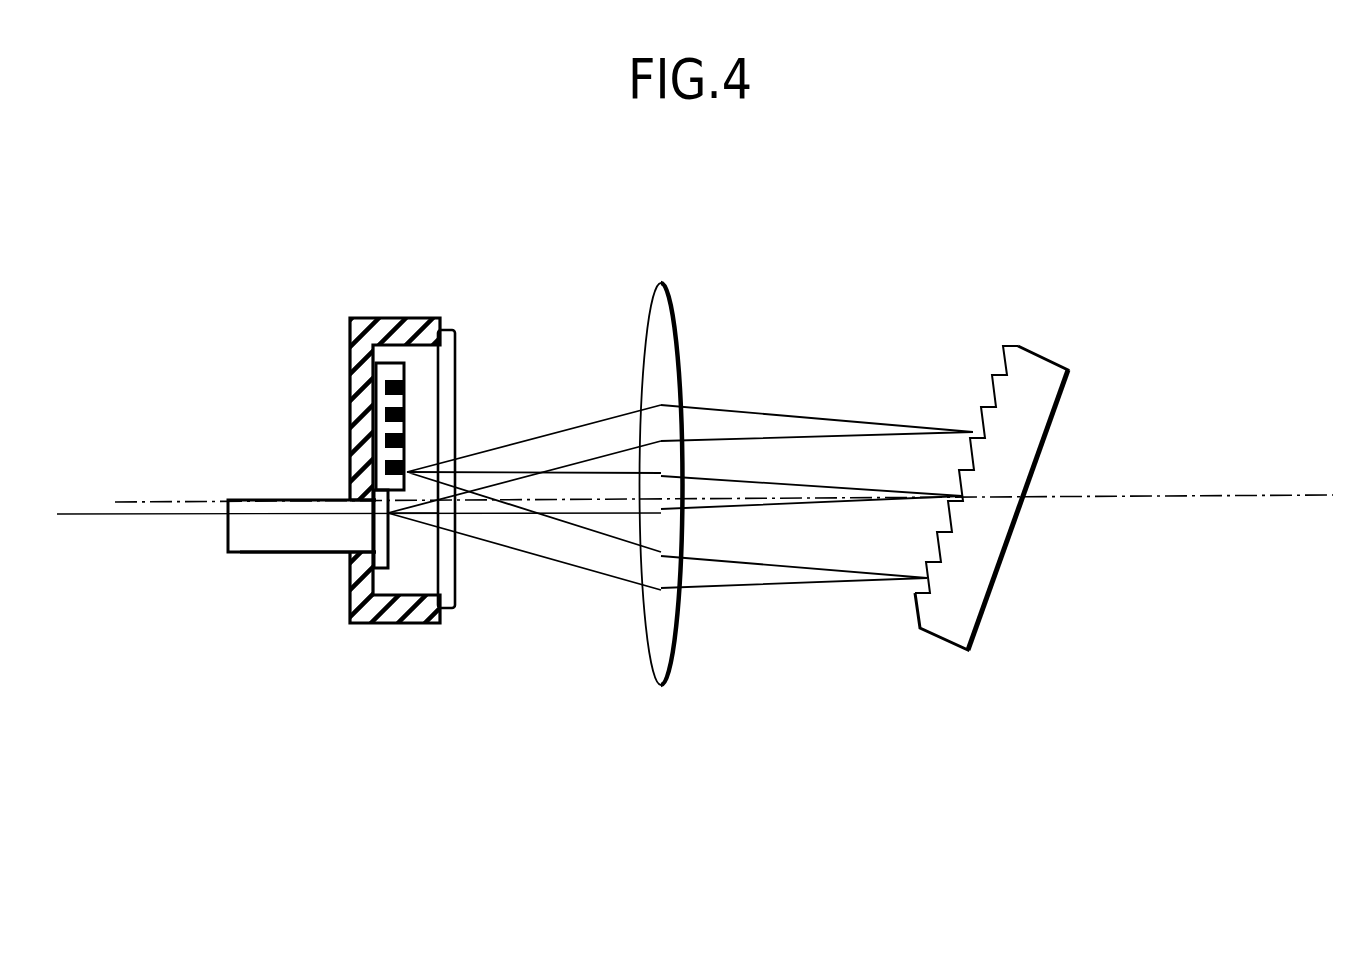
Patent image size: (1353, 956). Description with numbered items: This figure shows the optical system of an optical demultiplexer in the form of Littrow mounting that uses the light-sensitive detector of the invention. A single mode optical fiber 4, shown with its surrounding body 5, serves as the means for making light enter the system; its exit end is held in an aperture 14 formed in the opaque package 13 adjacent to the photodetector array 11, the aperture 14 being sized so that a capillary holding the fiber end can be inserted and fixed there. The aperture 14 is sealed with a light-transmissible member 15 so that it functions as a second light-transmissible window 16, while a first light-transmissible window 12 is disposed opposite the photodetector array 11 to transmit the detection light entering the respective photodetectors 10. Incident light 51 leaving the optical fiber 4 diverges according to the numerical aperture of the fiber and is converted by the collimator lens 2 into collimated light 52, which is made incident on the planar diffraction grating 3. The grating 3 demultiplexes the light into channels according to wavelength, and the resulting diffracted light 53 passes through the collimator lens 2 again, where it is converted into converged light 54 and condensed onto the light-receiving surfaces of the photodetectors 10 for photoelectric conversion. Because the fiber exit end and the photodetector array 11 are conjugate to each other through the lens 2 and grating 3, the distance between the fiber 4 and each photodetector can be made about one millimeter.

The collimator lens 2 is at (666, 312).
The planar diffraction grating 3 is at (1033, 378).
The optical fiber 4 is at (250, 517).
The fiber cladding 5 is at (290, 545).
The photodetector 10 is at (405, 385).
The photodetector array 11 is at (382, 373).
The first light-transmissible window 12 is at (455, 343).
The package 13 is at (358, 337).
The aperture 14 is at (357, 527).
The light-transmissible member 15 is at (392, 550).
The second light-transmissible window 16 is at (402, 536).
The incident light 51 is at (608, 515).
The collimated light 52 is at (760, 514).
The diffracted light 53 is at (795, 489).
The converged light 54 is at (597, 476).